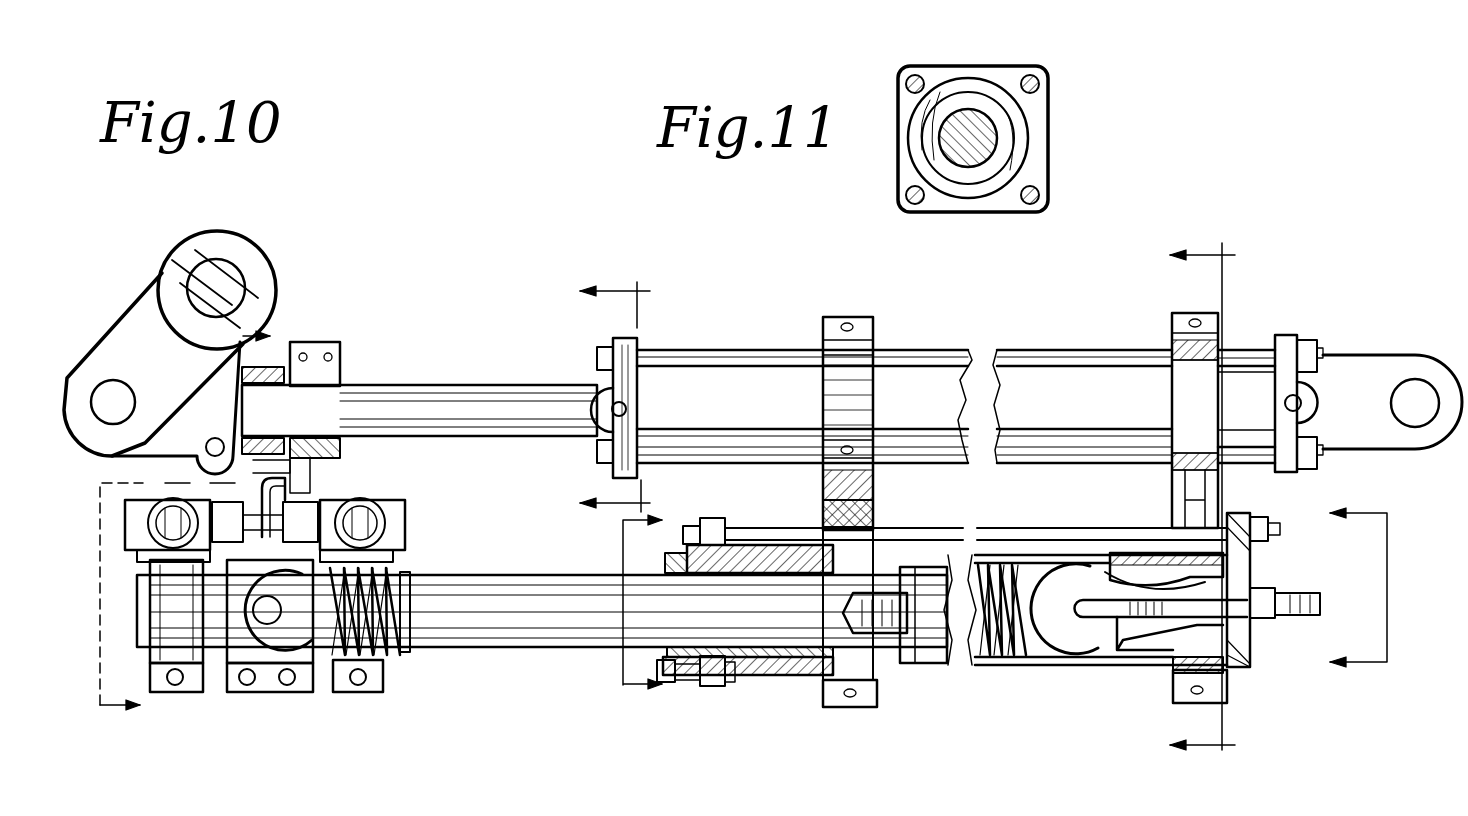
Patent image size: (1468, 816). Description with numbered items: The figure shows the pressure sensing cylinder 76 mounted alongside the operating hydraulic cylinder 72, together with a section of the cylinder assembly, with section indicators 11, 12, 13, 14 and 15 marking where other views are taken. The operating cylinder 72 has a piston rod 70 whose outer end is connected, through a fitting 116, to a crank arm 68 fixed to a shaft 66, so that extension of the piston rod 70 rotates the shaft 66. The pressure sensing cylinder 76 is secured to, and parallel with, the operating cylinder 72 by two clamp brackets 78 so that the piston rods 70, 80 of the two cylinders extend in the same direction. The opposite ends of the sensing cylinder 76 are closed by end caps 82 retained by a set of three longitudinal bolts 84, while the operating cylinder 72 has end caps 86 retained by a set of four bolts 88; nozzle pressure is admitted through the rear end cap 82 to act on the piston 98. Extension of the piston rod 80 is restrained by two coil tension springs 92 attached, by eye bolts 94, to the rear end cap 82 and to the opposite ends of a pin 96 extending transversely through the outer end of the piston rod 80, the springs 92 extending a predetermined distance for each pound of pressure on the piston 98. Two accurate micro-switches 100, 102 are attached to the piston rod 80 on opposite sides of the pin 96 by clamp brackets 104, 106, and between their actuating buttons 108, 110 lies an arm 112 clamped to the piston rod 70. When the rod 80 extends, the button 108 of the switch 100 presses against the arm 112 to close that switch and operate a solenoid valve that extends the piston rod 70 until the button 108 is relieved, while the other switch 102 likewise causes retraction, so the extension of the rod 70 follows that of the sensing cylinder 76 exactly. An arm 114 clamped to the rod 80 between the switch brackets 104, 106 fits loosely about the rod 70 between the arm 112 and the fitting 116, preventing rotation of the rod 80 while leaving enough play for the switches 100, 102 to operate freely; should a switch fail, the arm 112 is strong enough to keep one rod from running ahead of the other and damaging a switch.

In FIG. 10, the shaft 66 is at (240, 270).
In FIG. 10, the crank arm 68 is at (112, 325).
In FIG. 10, the piston rod 70 is at (486, 382).
In FIG. 11, the piston rod 70 is at (1000, 140).
In FIG. 10, the operating hydraulic cylinder 72 is at (705, 382).
In FIG. 11, the operating hydraulic cylinder 72 is at (1040, 152).
In FIG. 10, the pressure sensing cylinder 76 is at (1047, 668).
In FIG. 10, the clamp brackets 78 is at (1174, 315).
In FIG. 10, the piston rod 80 is at (562, 650).
In FIG. 10, the end caps 82 is at (760, 674).
In FIG. 10, the longitudinal bolts 84 is at (1088, 535).
In FIG. 10, the end caps 86 is at (613, 340).
In FIG. 11, the end caps 86 is at (960, 66).
In FIG. 10, the bolts 88 is at (1018, 350).
In FIG. 11, the bolts 88 is at (1040, 80).
In FIG. 10, the coil tension springs 92 is at (403, 663).
In FIG. 10, the eye bolts 94 is at (1175, 633).
In FIG. 10, the pin 96 is at (273, 655).
In FIG. 10, the piston 98 is at (908, 665).
In FIG. 10, the micro-switch 100 is at (410, 495).
In FIG. 10, the micro-switch 102 is at (138, 500).
In FIG. 10, the clamp bracket 104 is at (352, 693).
In FIG. 10, the clamp bracket 106 is at (190, 697).
In FIG. 10, the actuating button 108 is at (335, 508).
In FIG. 10, the actuating button 110 is at (258, 510).
In FIG. 10, the arm 112 is at (300, 495).
In FIG. 10, the arm 114 is at (338, 348).
In FIG. 10, the fitting 116 is at (200, 404).
In FIG. 10, the section line 11- 11 is at (600, 398).
In FIG. 10, the section line 12- 12 is at (1185, 500).
In FIG. 10, the section line 13- 13 is at (1338, 588).
In FIG. 10, the section line 14- 14 is at (658, 604).
In FIG. 10, the section line 15- 15 is at (200, 518).